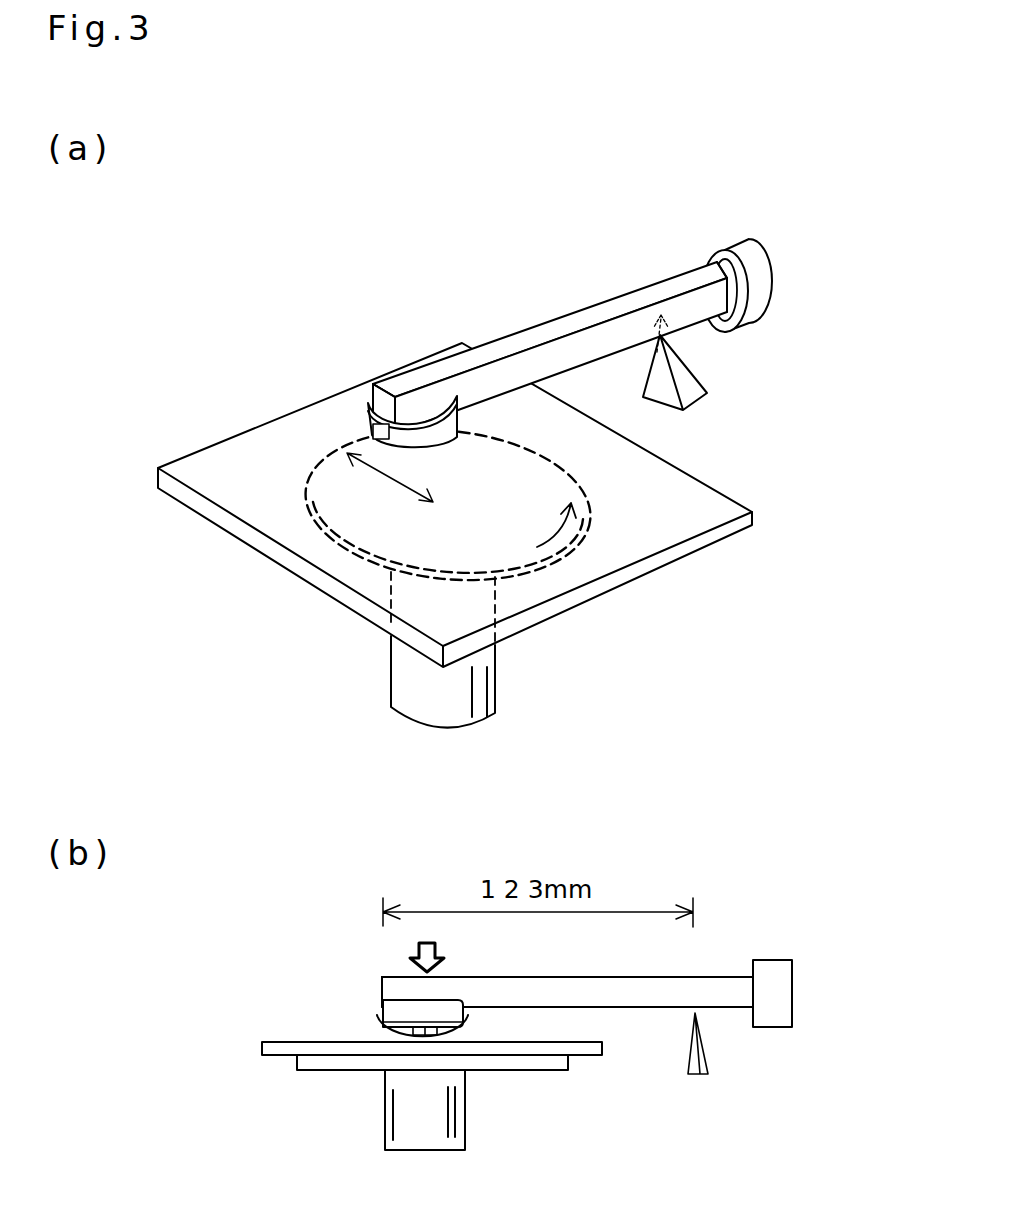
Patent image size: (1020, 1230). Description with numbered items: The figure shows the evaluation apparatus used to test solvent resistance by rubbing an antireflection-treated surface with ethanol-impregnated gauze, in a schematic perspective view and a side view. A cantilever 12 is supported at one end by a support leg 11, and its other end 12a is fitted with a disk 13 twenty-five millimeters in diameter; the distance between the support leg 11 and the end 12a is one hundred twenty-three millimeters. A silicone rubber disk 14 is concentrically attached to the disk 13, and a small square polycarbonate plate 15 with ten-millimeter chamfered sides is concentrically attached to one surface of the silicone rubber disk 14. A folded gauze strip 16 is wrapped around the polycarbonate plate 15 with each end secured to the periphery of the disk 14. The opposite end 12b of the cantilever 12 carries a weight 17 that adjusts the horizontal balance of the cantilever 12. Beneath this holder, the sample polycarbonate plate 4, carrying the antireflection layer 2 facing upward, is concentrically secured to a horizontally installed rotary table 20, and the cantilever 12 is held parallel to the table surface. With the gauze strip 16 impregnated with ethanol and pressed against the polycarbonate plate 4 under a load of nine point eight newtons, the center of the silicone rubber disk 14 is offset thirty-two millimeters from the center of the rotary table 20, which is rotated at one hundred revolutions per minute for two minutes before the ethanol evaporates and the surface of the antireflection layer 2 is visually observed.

The antireflection layer 2 is at (200, 486).
The polycarbonate plate 4 is at (223, 520).
The support leg 11 is at (703, 365).
The cantilever 12 is at (588, 302).
The end of the cantilever 12a is at (395, 385).
The end of the cantilever 12b is at (703, 275).
The disk 13 is at (460, 400).
The silicone rubber disk 14 is at (370, 414).
The polycarbonate plate 15 is at (470, 1025).
The gauze strip 16 is at (373, 433).
The weight 17 is at (764, 289).
The rotary table 20 is at (545, 585).